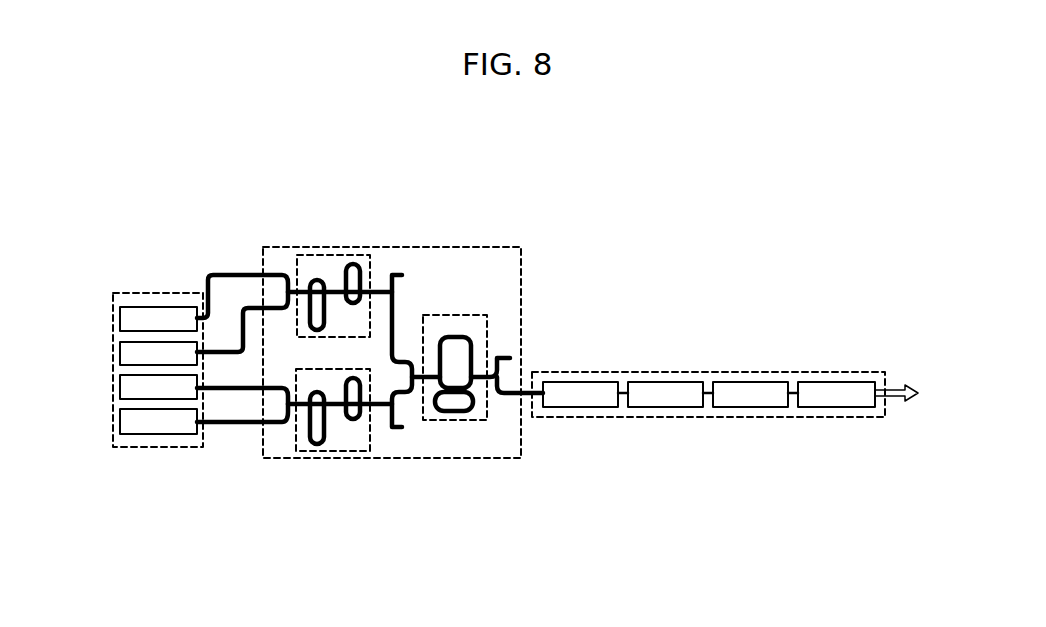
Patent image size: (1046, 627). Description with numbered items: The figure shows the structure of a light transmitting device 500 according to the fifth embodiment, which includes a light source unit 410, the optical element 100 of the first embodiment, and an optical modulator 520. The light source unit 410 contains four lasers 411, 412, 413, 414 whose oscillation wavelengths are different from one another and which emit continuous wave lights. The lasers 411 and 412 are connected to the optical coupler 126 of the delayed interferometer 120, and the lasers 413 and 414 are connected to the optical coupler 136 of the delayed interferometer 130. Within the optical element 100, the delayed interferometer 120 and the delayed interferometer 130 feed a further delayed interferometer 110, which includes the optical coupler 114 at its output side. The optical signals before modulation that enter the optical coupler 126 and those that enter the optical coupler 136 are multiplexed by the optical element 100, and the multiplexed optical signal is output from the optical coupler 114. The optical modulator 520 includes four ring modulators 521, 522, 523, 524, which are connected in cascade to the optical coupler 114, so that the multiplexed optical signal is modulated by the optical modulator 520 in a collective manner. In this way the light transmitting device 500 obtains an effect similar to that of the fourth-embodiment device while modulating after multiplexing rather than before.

The optical element 100 is at (441, 247).
The delayed interferometer 110 is at (448, 420).
The optical coupler 114 is at (478, 378).
The delayed interferometer 120 is at (353, 255).
The optical coupler 126 is at (297, 290).
The delayed interferometer 130 is at (343, 453).
The optical coupler 136 is at (298, 406).
The light source unit 410 is at (152, 292).
The laser 411 is at (176, 307).
The laser 412 is at (198, 362).
The laser 413 is at (140, 435).
The laser 414 is at (170, 435).
The light transmitting device 500 is at (678, 192).
The optical modulator 520 is at (708, 372).
The ring modulator 521 is at (581, 407).
The ring modulator 522 is at (665, 407).
The ring modulator 523 is at (752, 407).
The ring modulator 524 is at (838, 407).